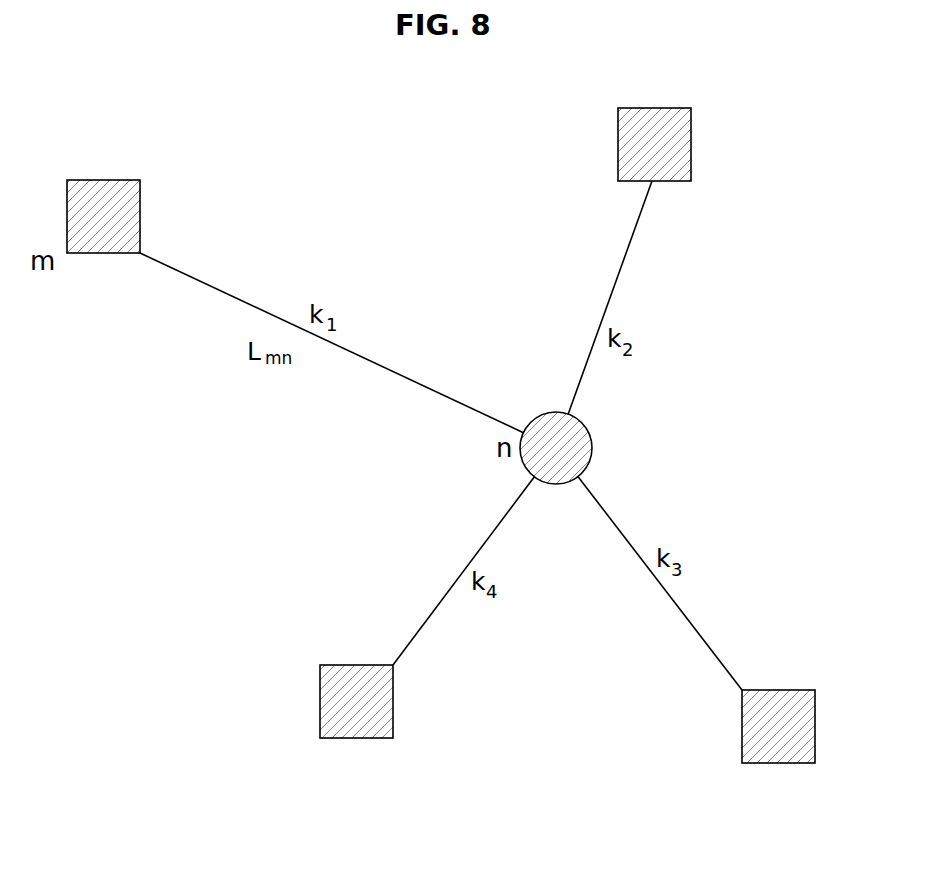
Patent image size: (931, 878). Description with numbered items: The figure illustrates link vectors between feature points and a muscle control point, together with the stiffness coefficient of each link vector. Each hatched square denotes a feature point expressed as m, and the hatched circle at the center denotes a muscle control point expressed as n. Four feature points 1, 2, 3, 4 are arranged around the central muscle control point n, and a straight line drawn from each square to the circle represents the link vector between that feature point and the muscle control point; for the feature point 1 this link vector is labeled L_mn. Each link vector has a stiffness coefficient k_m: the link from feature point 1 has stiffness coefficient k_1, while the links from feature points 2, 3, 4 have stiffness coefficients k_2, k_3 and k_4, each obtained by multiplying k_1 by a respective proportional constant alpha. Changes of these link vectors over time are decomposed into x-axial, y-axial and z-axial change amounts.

The feature point 1 is at (88, 216).
The feature point 2 is at (666, 129).
The feature point 3 is at (793, 726).
The feature point 4 is at (340, 701).